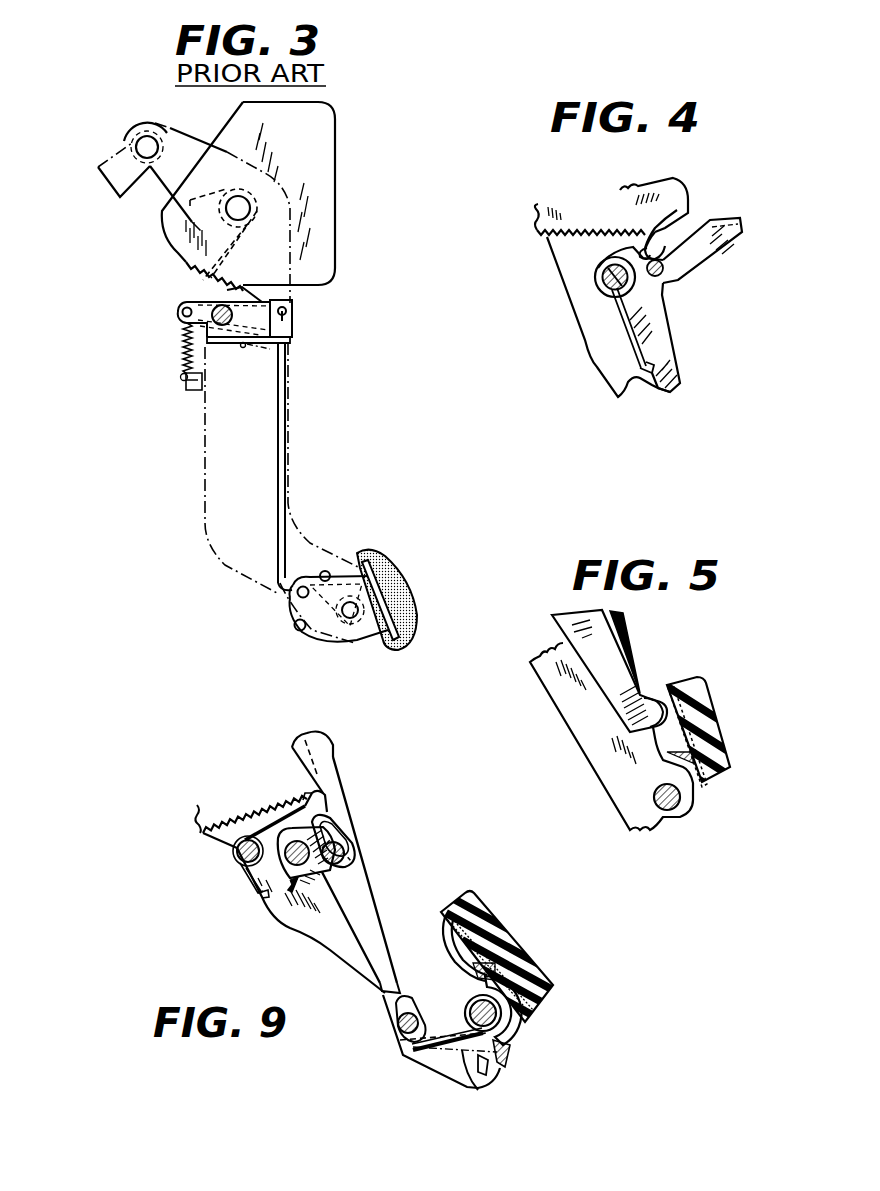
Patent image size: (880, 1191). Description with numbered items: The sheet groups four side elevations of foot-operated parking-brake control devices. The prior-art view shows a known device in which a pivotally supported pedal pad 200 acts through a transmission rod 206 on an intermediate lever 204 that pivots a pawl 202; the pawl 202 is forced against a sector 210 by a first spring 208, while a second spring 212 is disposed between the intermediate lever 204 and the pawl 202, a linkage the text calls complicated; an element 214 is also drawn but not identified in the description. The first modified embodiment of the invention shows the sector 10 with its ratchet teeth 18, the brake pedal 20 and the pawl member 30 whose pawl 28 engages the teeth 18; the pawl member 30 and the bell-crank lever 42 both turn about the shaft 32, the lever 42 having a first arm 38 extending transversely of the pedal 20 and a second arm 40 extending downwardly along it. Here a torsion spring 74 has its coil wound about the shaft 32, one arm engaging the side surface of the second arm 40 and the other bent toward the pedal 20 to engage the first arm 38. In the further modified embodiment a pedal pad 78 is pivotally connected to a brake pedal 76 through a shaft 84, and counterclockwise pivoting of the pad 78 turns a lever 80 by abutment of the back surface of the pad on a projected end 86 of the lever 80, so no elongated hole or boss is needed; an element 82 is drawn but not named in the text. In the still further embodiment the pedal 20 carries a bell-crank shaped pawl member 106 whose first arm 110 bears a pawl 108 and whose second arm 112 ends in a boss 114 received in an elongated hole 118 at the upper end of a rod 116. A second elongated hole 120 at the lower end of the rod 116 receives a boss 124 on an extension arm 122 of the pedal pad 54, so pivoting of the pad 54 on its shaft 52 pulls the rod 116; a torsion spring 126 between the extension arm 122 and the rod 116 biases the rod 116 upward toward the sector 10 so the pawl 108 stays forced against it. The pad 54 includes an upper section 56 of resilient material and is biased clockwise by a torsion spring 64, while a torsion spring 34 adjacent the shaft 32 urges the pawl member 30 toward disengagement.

In FIG. 4, the sector 10 is at (675, 188).
In FIG. 9, the sector 10 is at (322, 753).
In FIG. 4, the ratchet teeth 18 is at (570, 237).
In FIG. 9, the ratchet teeth 18 is at (225, 840).
In FIG. 4, the parking brake pedal 20 is at (605, 370).
In FIG. 9, the parking brake pedal 20 is at (297, 930).
In FIG. 4, the pawl 28 is at (687, 207).
In FIG. 4, the pawl member 30 is at (647, 232).
In FIG. 4, the shaft 32 is at (605, 277).
In FIG. 9, the torsion spring 34 is at (243, 877).
In FIG. 4, the first arm 38 is at (730, 243).
In FIG. 4, the second arm 40 is at (680, 387).
In FIG. 4, the bell-crank lever 42 is at (645, 288).
In FIG. 9, the shaft 52 is at (490, 1025).
In FIG. 9, the pedal pad 54 is at (540, 990).
In FIG. 9, the upper section 56 is at (480, 915).
In FIG. 9, the torsion spring 64 is at (460, 960).
In FIG. 4, the torsion spring 74 is at (613, 312).
In FIG. 5, the brake pedal 76 is at (630, 767).
In FIG. 5, the pedal pad 78 is at (717, 773).
In FIG. 5, the lever 80 is at (602, 647).
In FIG. 5, the pad 82 is at (705, 753).
In FIG. 5, the shaft 84 is at (670, 810).
In FIG. 5, the projected end 86 is at (650, 710).
In FIG. 9, the bell-crank shaped pawl member 106 is at (291, 887).
In FIG. 9, the pawl 108 is at (308, 792).
In FIG. 9, the first arm 110 is at (297, 812).
In FIG. 9, the second arm 112 is at (313, 870).
In FIG. 9, the pin or boss 114 is at (337, 843).
In FIG. 9, the rod 116 is at (358, 907).
In FIG. 9, the elongated hole 118 is at (333, 827).
In FIG. 9, the elongated hole 120 is at (397, 1007).
In FIG. 9, the extension arm 122 is at (442, 1040).
In FIG. 9, the pin or boss 124 is at (402, 1044).
In FIG. 9, the torsion spring 126 is at (473, 1062).
In FIG. 3, the pedal pad 200 is at (397, 572).
In FIG. 3, the pawl 202 is at (195, 302).
In FIG. 3, the intermediate lever 204 is at (275, 298).
In FIG. 3, the transmission rod 206 is at (280, 425).
In FIG. 3, the first spring 208 is at (186, 348).
In FIG. 3, the sector 210 is at (317, 144).
In FIG. 3, the second spring 212 is at (293, 333).
In FIG. 3, the pedal arm 214 is at (213, 476).